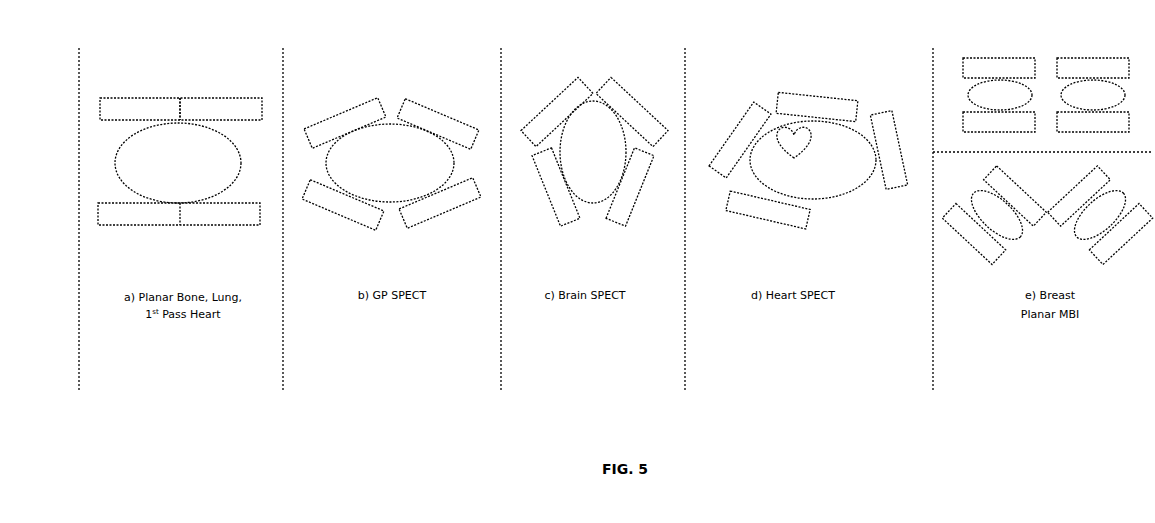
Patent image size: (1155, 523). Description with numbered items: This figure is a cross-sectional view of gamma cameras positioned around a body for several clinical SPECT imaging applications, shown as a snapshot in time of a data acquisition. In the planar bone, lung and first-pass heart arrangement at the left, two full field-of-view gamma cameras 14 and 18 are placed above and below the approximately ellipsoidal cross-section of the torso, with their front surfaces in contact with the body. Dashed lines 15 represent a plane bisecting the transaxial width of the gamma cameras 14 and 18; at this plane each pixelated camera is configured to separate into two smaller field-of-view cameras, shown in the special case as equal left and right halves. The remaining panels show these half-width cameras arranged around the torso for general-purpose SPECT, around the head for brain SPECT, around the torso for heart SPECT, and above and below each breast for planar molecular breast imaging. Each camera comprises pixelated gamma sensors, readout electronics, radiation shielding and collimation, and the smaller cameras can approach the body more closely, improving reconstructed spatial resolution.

The gamma camera 14 is at (181, 109).
The gamma camera 18 is at (179, 214).
The dashed lines 15 is at (213, 157).